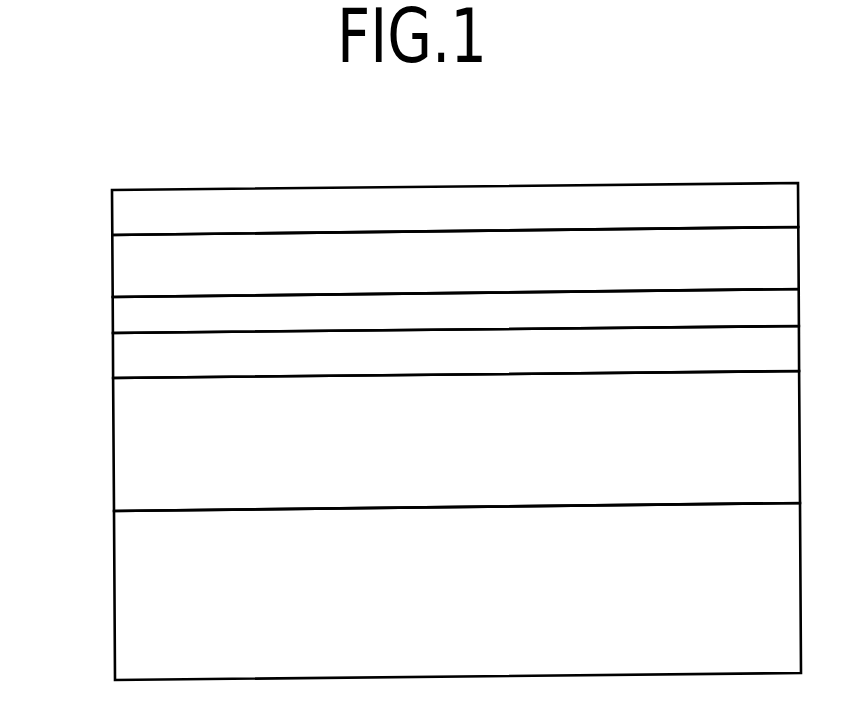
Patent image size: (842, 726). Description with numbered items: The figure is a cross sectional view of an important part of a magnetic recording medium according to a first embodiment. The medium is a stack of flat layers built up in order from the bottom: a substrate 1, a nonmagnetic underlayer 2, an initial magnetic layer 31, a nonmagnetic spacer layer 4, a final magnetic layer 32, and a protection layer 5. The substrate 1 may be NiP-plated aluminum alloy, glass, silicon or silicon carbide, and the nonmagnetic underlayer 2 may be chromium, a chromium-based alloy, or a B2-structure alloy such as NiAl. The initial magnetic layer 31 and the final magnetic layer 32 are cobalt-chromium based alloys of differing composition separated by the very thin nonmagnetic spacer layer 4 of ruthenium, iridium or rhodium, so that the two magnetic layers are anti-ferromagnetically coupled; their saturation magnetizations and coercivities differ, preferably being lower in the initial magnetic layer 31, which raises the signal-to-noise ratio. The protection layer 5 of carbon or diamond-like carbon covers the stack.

The substrate 1 is at (114, 598).
The nonmagnetic underlayer 2 is at (113, 448).
The initial magnetic layer 31 is at (112, 362).
The nonmagnetic spacer layer 4 is at (112, 318).
The final magnetic layer 32 is at (112, 270).
The protection layer 5 is at (112, 215).